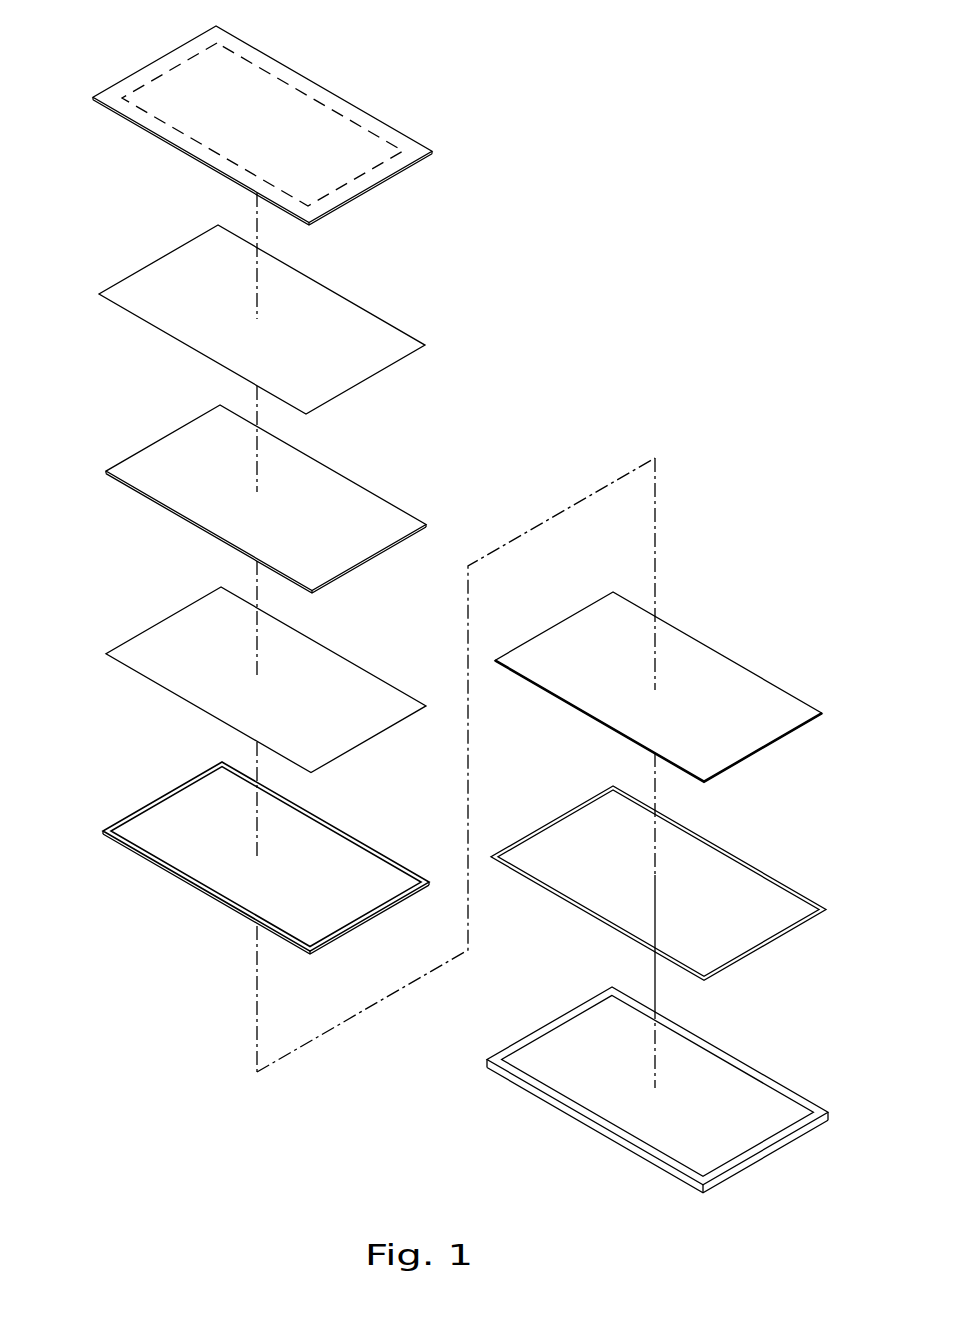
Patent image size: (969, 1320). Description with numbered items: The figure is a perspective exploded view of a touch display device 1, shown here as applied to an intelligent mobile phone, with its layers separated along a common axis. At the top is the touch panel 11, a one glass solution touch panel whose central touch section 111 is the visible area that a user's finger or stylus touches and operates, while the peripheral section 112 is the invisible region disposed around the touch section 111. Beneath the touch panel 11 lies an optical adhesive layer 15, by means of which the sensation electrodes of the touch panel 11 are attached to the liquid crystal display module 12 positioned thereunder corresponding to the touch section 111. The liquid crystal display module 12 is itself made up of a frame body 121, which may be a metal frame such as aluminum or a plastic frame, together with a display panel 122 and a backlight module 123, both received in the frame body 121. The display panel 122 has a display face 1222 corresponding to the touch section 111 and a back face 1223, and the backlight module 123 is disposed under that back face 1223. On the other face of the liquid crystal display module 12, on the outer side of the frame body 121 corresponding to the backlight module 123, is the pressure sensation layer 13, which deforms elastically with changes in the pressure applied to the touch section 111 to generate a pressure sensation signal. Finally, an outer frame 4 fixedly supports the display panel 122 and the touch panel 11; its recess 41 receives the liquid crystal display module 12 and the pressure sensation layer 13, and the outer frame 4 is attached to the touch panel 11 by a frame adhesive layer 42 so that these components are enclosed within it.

The touch display device 1 is at (613, 177).
The touch panel 11 is at (313, 83).
The touch section 111 is at (238, 68).
The peripheral section 112 is at (370, 120).
The optical adhesive layer 15 is at (172, 275).
The liquid crystal display module 12 is at (120, 932).
The frame body 121 is at (160, 793).
The display panel 122 is at (148, 452).
The display face 1222 is at (348, 493).
The back face 1223 is at (382, 560).
The backlight module 123 is at (152, 630).
The pressure sensation layer 13 is at (687, 647).
The outer frame 4 is at (760, 1068).
The recess 41 is at (682, 1057).
The frame adhesive layer 42 is at (752, 863).